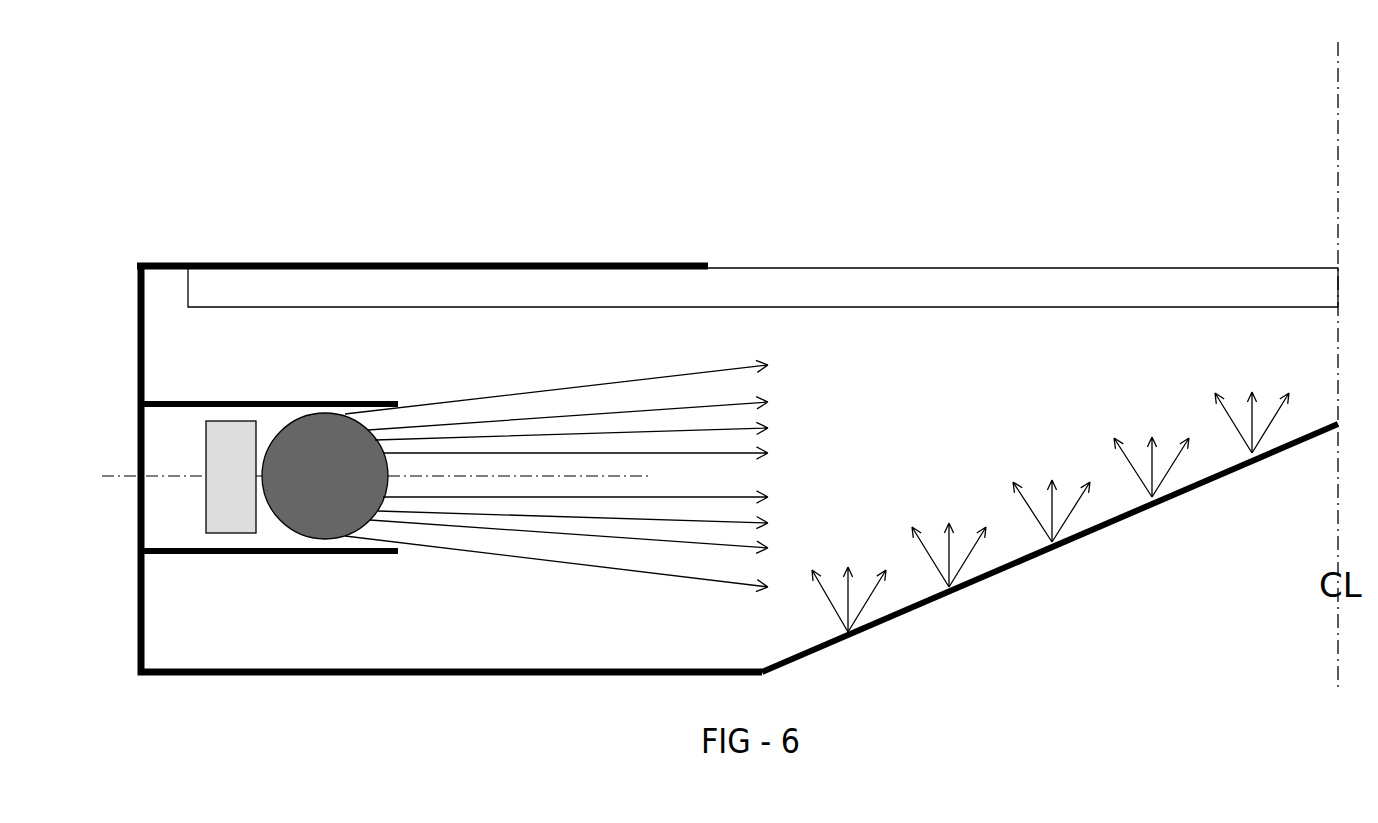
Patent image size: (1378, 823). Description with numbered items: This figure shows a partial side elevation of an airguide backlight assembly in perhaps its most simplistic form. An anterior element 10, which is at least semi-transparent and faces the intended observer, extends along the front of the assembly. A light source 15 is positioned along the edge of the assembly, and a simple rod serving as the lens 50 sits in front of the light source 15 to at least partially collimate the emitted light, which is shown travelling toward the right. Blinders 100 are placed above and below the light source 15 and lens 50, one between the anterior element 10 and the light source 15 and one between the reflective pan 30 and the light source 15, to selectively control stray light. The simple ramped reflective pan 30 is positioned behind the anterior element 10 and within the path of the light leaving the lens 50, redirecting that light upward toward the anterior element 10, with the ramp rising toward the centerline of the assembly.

The anterior element 10 is at (763, 287).
The light source 15 is at (236, 515).
The reflective pan 30 is at (993, 580).
The lens 50 is at (339, 538).
The blinders 100 is at (177, 550).